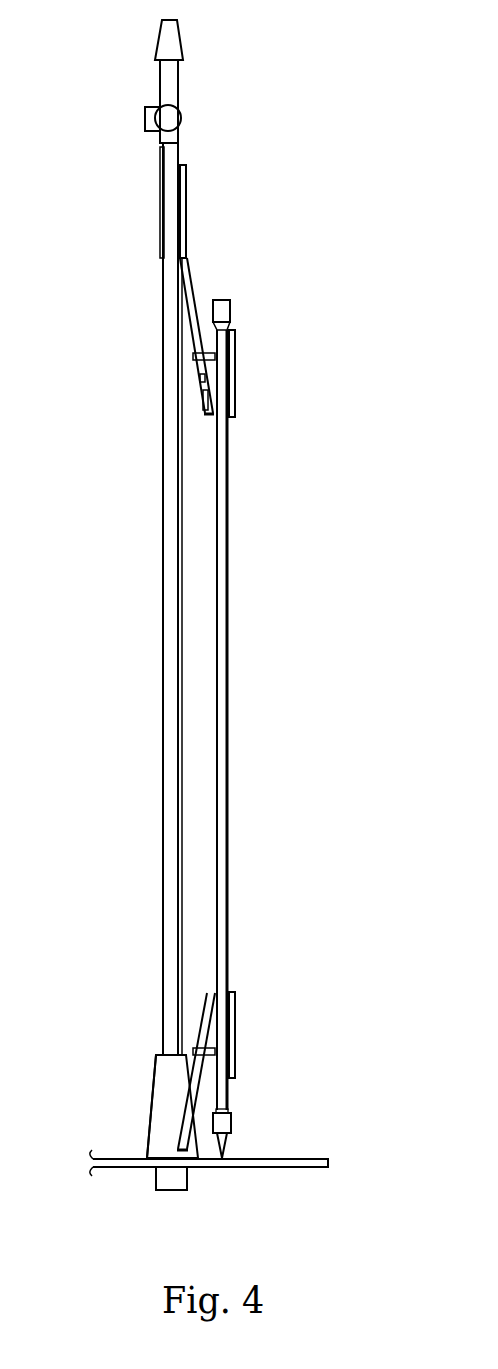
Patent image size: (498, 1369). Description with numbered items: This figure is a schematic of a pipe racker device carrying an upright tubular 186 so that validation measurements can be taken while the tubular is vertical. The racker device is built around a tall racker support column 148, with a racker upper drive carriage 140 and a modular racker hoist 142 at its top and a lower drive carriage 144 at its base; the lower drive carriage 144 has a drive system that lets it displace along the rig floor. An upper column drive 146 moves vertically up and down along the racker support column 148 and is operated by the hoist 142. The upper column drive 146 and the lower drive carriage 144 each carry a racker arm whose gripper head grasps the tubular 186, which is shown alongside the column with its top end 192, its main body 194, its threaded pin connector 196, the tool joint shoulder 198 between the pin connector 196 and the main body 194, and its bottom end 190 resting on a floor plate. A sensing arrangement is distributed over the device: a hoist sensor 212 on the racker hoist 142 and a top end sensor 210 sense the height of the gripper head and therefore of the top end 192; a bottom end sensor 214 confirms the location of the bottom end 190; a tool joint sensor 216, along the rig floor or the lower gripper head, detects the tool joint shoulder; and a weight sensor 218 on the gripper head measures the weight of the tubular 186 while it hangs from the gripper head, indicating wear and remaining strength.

The racker upper drive carriage 140 is at (157, 43).
The modular racker hoist 142 is at (182, 118).
The lower drive carriage 144 is at (155, 1068).
The upper column drive 146 is at (186, 212).
The racker support column 148 is at (163, 785).
The tubular 186 is at (234, 743).
The bottom end 190 is at (223, 1158).
The top end 192 is at (215, 300).
The main body 194 is at (230, 587).
The threaded pin connector 196 is at (228, 1150).
The tool joint shoulder 198 is at (233, 1137).
The top end sensor 210 is at (206, 400).
The hoist sensor 212 is at (145, 118).
The bottom end sensor 214 is at (173, 1190).
The tool joint sensor 216 is at (152, 1110).
The weight sensor 218 is at (198, 378).